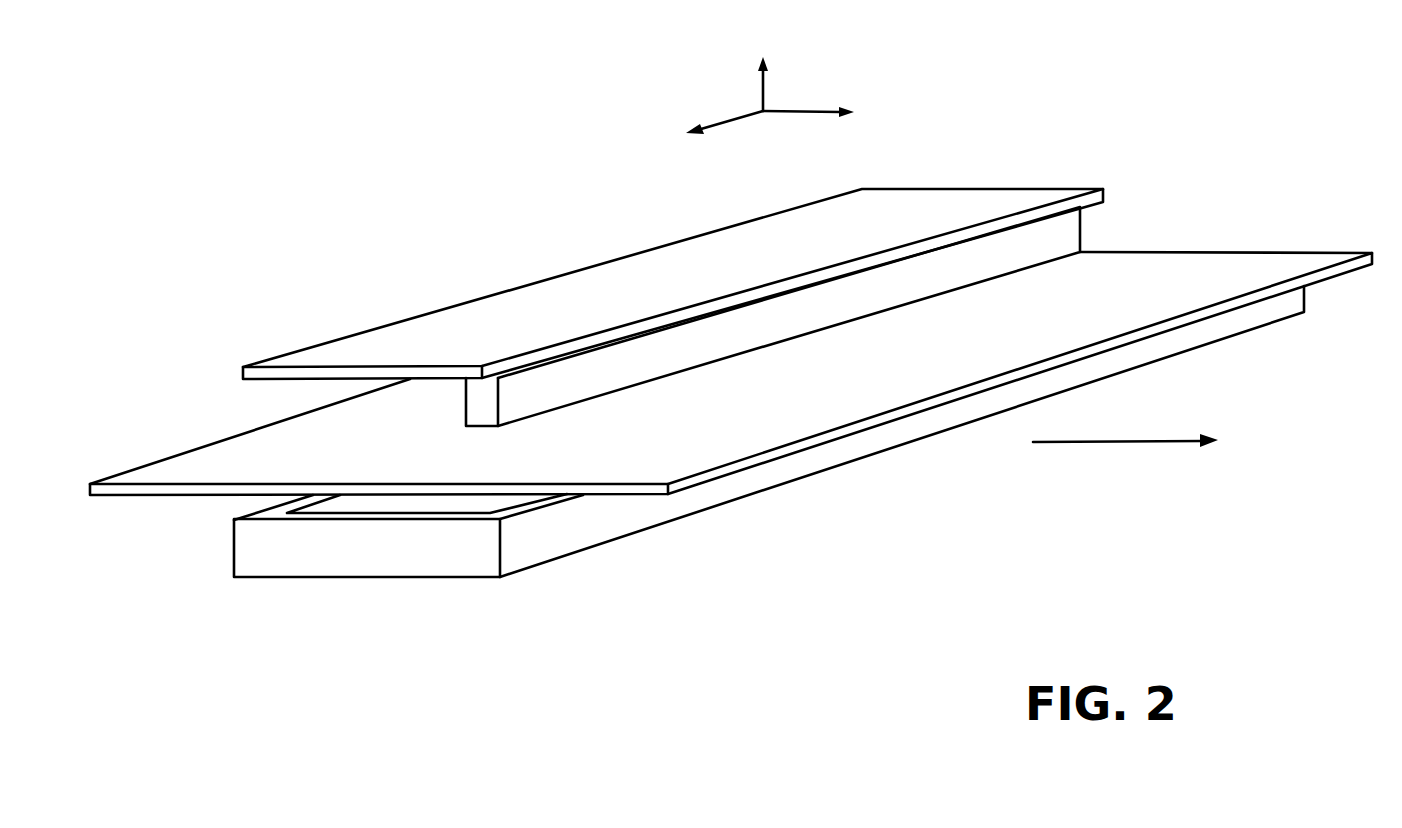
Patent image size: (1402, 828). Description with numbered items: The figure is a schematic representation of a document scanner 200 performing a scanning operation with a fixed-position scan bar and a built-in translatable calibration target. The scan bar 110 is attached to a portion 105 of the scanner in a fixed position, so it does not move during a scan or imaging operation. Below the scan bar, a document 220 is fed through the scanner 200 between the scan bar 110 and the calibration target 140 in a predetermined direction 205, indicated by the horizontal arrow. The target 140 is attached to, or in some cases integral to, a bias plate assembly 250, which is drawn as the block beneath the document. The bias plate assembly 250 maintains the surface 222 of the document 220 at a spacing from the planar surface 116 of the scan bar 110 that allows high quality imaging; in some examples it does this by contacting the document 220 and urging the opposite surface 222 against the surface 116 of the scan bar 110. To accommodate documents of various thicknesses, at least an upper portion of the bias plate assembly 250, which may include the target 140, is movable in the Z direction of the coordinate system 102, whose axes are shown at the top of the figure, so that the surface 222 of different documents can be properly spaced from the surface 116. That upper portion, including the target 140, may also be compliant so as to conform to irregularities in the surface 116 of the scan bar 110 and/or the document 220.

The document scanner 200 is at (290, 130).
The coordinate system 102 is at (781, 111).
The portion of the scanner 105 is at (980, 188).
The scan bar 110 is at (463, 400).
The planar surface of the scan bar 116 is at (602, 409).
The document 220 is at (202, 448).
The surface of the document 222 is at (1122, 274).
The bias plate assembly 250 is at (355, 574).
The calibration target 140 is at (425, 502).
The predetermined direction 205 is at (1145, 443).